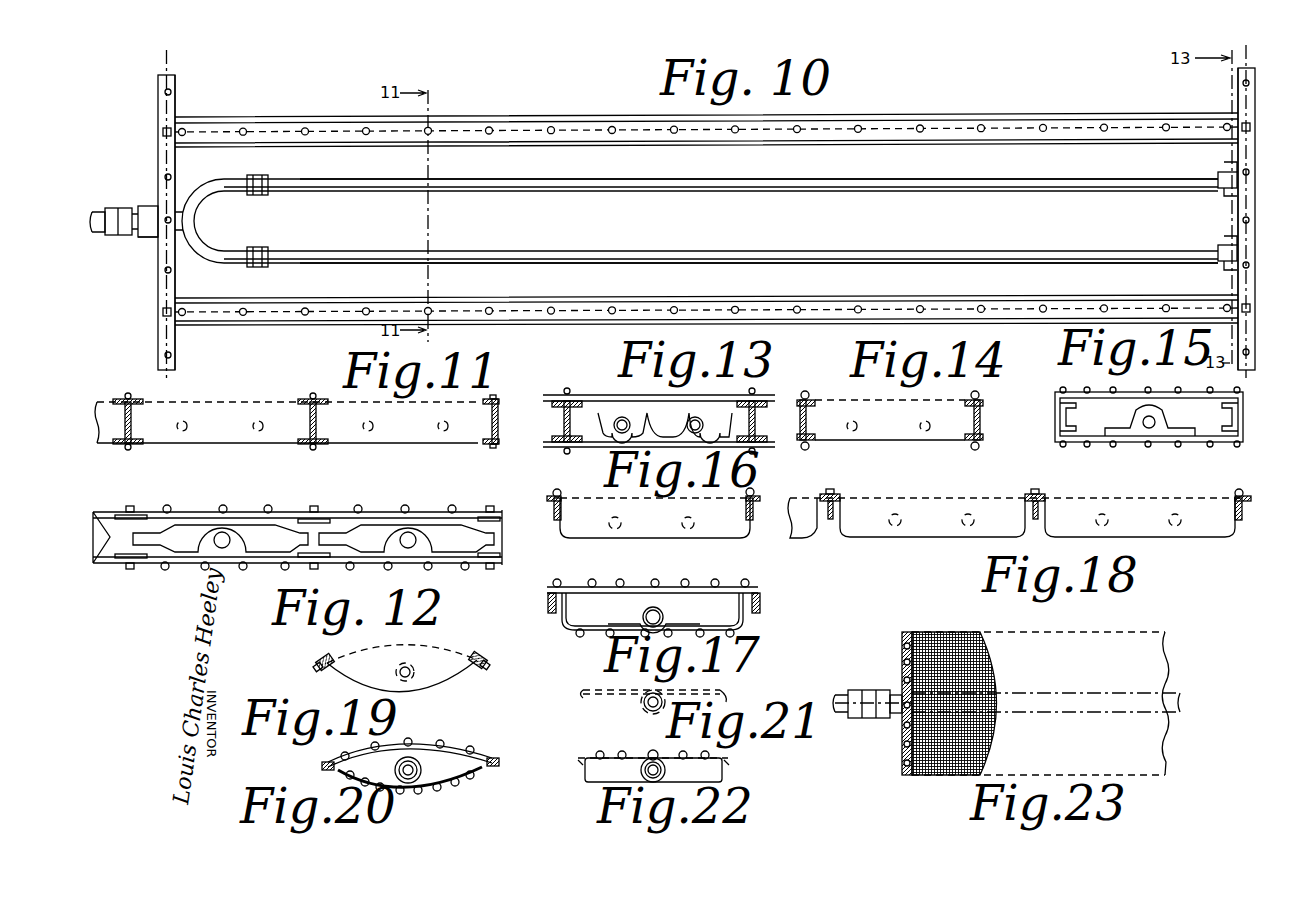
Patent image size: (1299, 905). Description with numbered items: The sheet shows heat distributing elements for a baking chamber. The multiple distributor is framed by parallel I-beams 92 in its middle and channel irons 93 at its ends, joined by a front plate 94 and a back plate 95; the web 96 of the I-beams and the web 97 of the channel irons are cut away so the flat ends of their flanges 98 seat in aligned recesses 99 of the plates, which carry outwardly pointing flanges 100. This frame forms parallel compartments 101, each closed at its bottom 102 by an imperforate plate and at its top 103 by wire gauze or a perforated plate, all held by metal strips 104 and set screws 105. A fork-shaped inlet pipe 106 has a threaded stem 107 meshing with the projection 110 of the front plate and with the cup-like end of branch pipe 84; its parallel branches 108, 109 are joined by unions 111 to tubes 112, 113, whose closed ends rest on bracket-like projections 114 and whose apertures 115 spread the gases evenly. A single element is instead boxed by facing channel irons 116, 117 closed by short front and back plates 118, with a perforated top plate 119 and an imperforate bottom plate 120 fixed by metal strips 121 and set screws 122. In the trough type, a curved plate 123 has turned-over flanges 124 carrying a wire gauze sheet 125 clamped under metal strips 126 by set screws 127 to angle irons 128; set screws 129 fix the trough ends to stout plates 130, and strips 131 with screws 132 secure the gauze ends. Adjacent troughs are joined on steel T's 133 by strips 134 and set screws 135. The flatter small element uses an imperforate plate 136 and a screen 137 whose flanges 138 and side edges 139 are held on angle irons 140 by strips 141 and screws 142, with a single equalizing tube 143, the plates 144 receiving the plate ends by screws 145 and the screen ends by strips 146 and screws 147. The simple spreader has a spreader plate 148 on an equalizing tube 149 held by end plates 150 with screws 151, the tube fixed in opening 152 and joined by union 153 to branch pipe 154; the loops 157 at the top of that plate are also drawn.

In FIG. 10, the branch pipe 84 is at (100, 210).
In FIG. 10, the I-beams 92 is at (488, 112).
In FIG. 11, the I-beams 92 is at (125, 424).
In FIG. 13, the I-beams 92 is at (562, 420).
In FIG. 11, the channel irons 93 is at (507, 421).
In FIG. 10, the front plate 94 is at (178, 347).
In FIG. 12, the front plate 94 is at (185, 545).
In FIG. 10, the back plate 95 is at (1240, 145).
In FIG. 13, the back plate 95 is at (622, 395).
In FIG. 11, the web 96 is at (310, 424).
In FIG. 11, the web 97 is at (498, 441).
In FIG. 11, the flanges 98 is at (148, 388).
In FIG. 16, the flanges 98 is at (537, 518).
In FIG. 12, the flanges 98 is at (330, 511).
In FIG. 12, the recesses 99 is at (300, 517).
In FIG. 10, the flanges 100 is at (158, 286).
In FIG. 10, the compartments 101 is at (537, 216).
In FIG. 11, the bottom 102 is at (410, 443).
In FIG. 11, the top 103 is at (218, 402).
In FIG. 10, the metal strips 104 is at (158, 98).
In FIG. 11, the metal strips 104 is at (305, 399).
In FIG. 13, the metal strips 104 is at (583, 395).
In FIG. 12, the metal strips 104 is at (108, 512).
In FIG. 10, the set screws 105 is at (163, 133).
In FIG. 11, the set screws 105 is at (313, 393).
In FIG. 13, the set screws 105 is at (564, 392).
In FIG. 17, the set screws 105 is at (545, 575).
In FIG. 12, the set screws 105 is at (130, 506).
In FIG. 10, the inlet pipe 106 is at (193, 220).
In FIG. 10, the stem 107 is at (148, 210).
In FIG. 15, the stem 107 is at (1149, 430).
In FIG. 17, the stem 107 is at (642, 614).
In FIG. 12, the stem 107 is at (222, 548).
In FIG. 10, the branch 108 is at (215, 180).
In FIG. 10, the branch 109 is at (215, 262).
In FIG. 10, the projection 110 is at (148, 236).
In FIG. 15, the projection 110 is at (1165, 432).
In FIG. 12, the projection 110 is at (230, 540).
In FIG. 10, the unions 111 is at (260, 195).
In FIG. 10, the tube 112 is at (335, 178).
In FIG. 11, the tube 112 is at (364, 448).
In FIG. 13, the tube 112 is at (618, 432).
In FIG. 14, the tube 112 is at (848, 424).
In FIG. 16, the tube 112 is at (609, 522).
In FIG. 18, the tube 112 is at (1096, 519).
In FIG. 10, the tube 113 is at (346, 264).
In FIG. 11, the tube 113 is at (445, 448).
In FIG. 13, the tube 113 is at (698, 418).
In FIG. 14, the tube 113 is at (928, 421).
In FIG. 16, the tube 113 is at (694, 522).
In FIG. 18, the tube 113 is at (1188, 519).
In FIG. 10, the bracket-like projections 114 is at (1222, 238).
In FIG. 13, the bracket-like projections 114 is at (637, 425).
In FIG. 11, the apertures 115 is at (253, 424).
In FIG. 14, the apertures 115 is at (857, 426).
In FIG. 21, the apertures 115 is at (644, 702).
In FIG. 14, the channel iron 116 is at (800, 425).
In FIG. 15, the channel iron 116 is at (1057, 420).
In FIG. 14, the channel iron 117 is at (983, 406).
In FIG. 15, the channel iron 117 is at (1243, 420).
In FIG. 15, the front and back plates 118 is at (1149, 417).
In FIG. 14, the perforated plate 119 is at (872, 400).
In FIG. 14, the imperforate plate 120 is at (880, 440).
In FIG. 14, the metal strips 121 is at (802, 395).
In FIG. 15, the metal strips 121 is at (1160, 393).
In FIG. 14, the set screws 122 is at (808, 398).
In FIG. 15, the set screws 122 is at (1090, 395).
In FIG. 16, the curved metal plate 123 is at (680, 538).
In FIG. 17, the curved metal plate 123 is at (562, 625).
In FIG. 18, the curved metal plate 123 is at (800, 530).
In FIG. 16, the flanges 124 is at (548, 498).
In FIG. 16, the wire gauze sheet 125 is at (638, 503).
In FIG. 18, the wire gauze sheet 125 is at (918, 508).
In FIG. 16, the metal strips 126 is at (562, 497).
In FIG. 18, the metal strips 126 is at (1251, 500).
In FIG. 16, the set screws 127 is at (557, 489).
In FIG. 18, the set screws 127 is at (1243, 490).
In FIG. 16, the angle irons 128 is at (553, 513).
In FIG. 17, the angle irons 128 is at (548, 600).
In FIG. 18, the angle irons 128 is at (1243, 512).
In FIG. 17, the set screws 129 is at (580, 637).
In FIG. 17, the front and back plates 130 is at (652, 611).
In FIG. 17, the metal strips 131 is at (636, 590).
In FIG. 17, the screws 132 is at (605, 572).
In FIG. 18, the steel T's 133 is at (830, 519).
In FIG. 18, the metal strips 134 is at (840, 496).
In FIG. 18, the set screws 135 is at (830, 489).
In FIG. 19, the imperforate plate 136 is at (392, 690).
In FIG. 20, the imperforate plate 136 is at (390, 790).
In FIG. 19, the screen 137 is at (388, 652).
In FIG. 20, the screen 137 is at (398, 745).
In FIG. 19, the flanges 138 is at (490, 675).
In FIG. 19, the side edges 139 is at (487, 667).
In FIG. 19, the angle irons 140 is at (401, 679).
In FIG. 20, the angle irons 140 is at (322, 766).
In FIG. 19, the metal strips 141 is at (330, 657).
In FIG. 19, the screws 142 is at (484, 660).
In FIG. 19, the equalizing tube 143 is at (412, 680).
In FIG. 20, the equalizing tube 143 is at (455, 784).
In FIG. 20, the plates 144 is at (391, 770).
In FIG. 20, the screws 145 is at (428, 790).
In FIG. 20, the metal strips 146 is at (330, 752).
In FIG. 20, the screws 147 is at (462, 745).
In FIG. 21, the spreader plate 148 is at (711, 690).
In FIG. 22, the spreader plate 148 is at (722, 760).
In FIG. 23, the spreader plate 148 is at (975, 632).
In FIG. 21, the equalizing tube 149 is at (645, 710).
In FIG. 22, the equalizing tube 149 is at (666, 770).
In FIG. 23, the equalizing tube 149 is at (1180, 695).
In FIG. 22, the end plates 150 is at (653, 770).
In FIG. 23, the end plates 150 is at (902, 646).
In FIG. 21, the screws 151 is at (643, 690).
In FIG. 22, the opening 152 is at (656, 750).
In FIG. 23, the opening 152 is at (895, 695).
In FIG. 23, the union 153 is at (855, 718).
In FIG. 23, the branch pipe 154 is at (838, 697).
In FIG. 22, the loop 157 is at (622, 742).